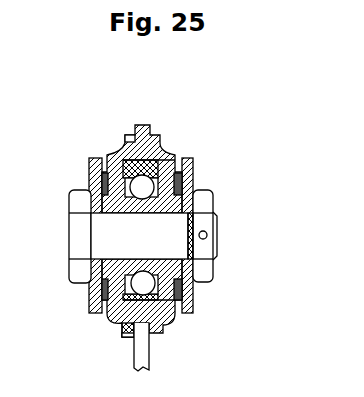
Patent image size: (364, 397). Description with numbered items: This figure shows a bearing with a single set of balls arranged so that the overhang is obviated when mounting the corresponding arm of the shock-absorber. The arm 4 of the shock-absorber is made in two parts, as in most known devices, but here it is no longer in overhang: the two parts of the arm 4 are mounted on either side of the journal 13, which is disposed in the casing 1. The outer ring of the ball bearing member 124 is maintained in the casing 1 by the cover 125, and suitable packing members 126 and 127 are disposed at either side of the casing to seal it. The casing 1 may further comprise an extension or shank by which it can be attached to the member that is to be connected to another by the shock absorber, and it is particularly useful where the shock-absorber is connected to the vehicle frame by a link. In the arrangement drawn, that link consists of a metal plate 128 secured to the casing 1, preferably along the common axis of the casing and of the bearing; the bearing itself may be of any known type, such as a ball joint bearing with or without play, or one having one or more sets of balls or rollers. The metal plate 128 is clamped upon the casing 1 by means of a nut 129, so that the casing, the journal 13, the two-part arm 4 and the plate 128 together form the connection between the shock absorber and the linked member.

The casing 1 is at (160, 133).
The arm of the shock-absorber 4 is at (97, 158).
The journal 13 is at (118, 243).
The ball bearing member 124 is at (126, 142).
The cover 125 is at (195, 300).
The packing member 126 is at (195, 170).
The packing member 127 is at (91, 173).
The metal plate 128 is at (140, 332).
The nut 129 is at (128, 327).